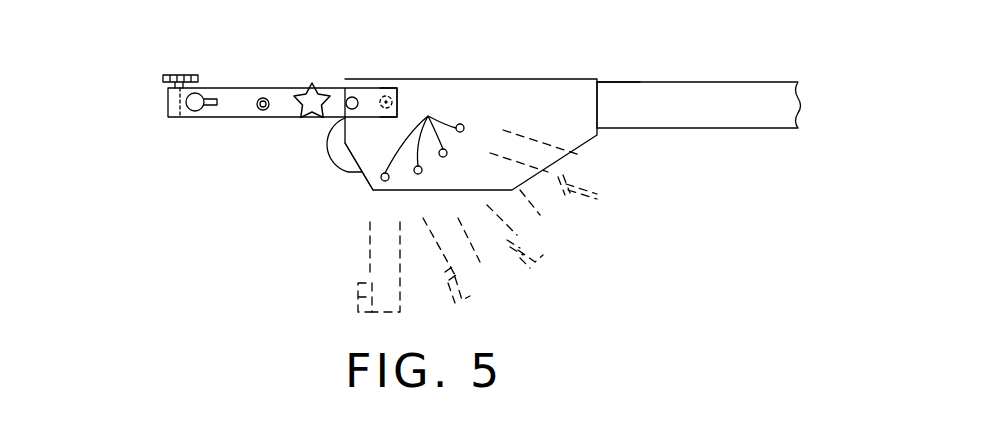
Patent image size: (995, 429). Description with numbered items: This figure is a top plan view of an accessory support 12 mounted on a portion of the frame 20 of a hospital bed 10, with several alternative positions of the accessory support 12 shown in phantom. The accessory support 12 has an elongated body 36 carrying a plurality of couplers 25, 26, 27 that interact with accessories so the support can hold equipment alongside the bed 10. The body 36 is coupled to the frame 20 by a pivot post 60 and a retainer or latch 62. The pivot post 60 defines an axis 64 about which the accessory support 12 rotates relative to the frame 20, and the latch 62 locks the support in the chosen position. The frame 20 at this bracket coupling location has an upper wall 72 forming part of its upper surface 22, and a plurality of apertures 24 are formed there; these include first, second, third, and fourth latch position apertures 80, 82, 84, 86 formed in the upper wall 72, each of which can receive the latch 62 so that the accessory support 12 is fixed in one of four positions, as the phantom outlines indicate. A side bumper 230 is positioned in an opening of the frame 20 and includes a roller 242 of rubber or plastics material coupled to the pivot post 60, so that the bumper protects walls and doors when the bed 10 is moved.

The hospital bed 10 is at (712, 40).
The accessory support 12 is at (226, 60).
The frame 20 is at (722, 90).
The upper surface 22 is at (615, 90).
The apertures 24 is at (420, 133).
The coupler 25 is at (197, 112).
The coupler 26 is at (263, 111).
The coupler 27 is at (352, 96).
The body 36 is at (243, 88).
The pivot post 60 is at (385, 92).
The latch 62 is at (312, 119).
The axis 64 is at (395, 100).
The upper wall 72 is at (548, 92).
The first latch position aperture 80 is at (464, 127).
The second latch position aperture 82 is at (447, 155).
The third latch position aperture 84 is at (417, 175).
The fourth latch position aperture 86 is at (382, 180).
The side bumper 230 is at (328, 172).
The roller 242 is at (328, 158).